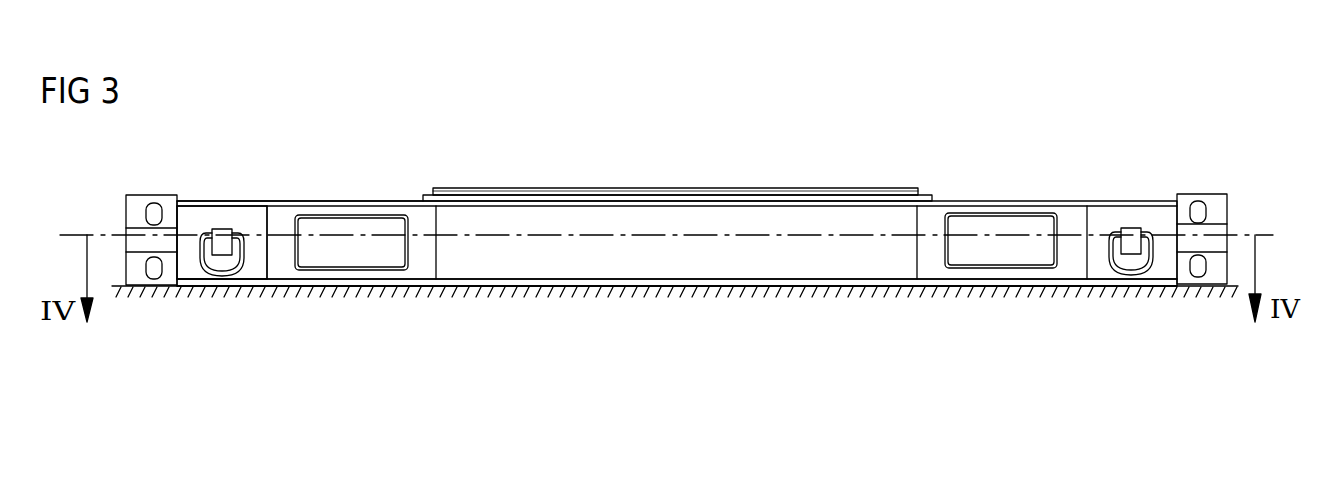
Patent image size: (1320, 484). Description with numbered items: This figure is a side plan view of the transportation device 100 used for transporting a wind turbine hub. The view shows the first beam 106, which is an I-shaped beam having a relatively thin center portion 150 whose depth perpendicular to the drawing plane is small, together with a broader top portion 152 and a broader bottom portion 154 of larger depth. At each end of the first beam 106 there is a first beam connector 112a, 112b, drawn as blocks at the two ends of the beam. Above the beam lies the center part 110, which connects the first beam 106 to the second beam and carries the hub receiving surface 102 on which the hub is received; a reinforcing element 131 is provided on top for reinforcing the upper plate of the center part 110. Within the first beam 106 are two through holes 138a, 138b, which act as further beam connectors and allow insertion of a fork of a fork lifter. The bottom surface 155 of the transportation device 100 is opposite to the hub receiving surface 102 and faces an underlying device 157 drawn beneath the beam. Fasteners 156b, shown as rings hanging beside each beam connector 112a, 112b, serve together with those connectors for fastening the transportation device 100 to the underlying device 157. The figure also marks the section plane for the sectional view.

The transportation device 100 is at (743, 121).
The hub receiving surface 102 is at (880, 188).
The first beam 106 is at (1053, 202).
The center part 110 is at (427, 195).
The first beam connector 112a is at (1215, 200).
The first beam connector 112b is at (137, 200).
The reinforcing element 131 is at (502, 192).
The through hole 138a is at (355, 253).
The through hole 138b is at (1004, 250).
The center portion 150 is at (208, 213).
The top portion 152 is at (250, 205).
The bottom portion 154 is at (253, 287).
The bottom surface 155 is at (847, 287).
The fastener 156b is at (205, 270).
The underlying device 157 is at (537, 277).